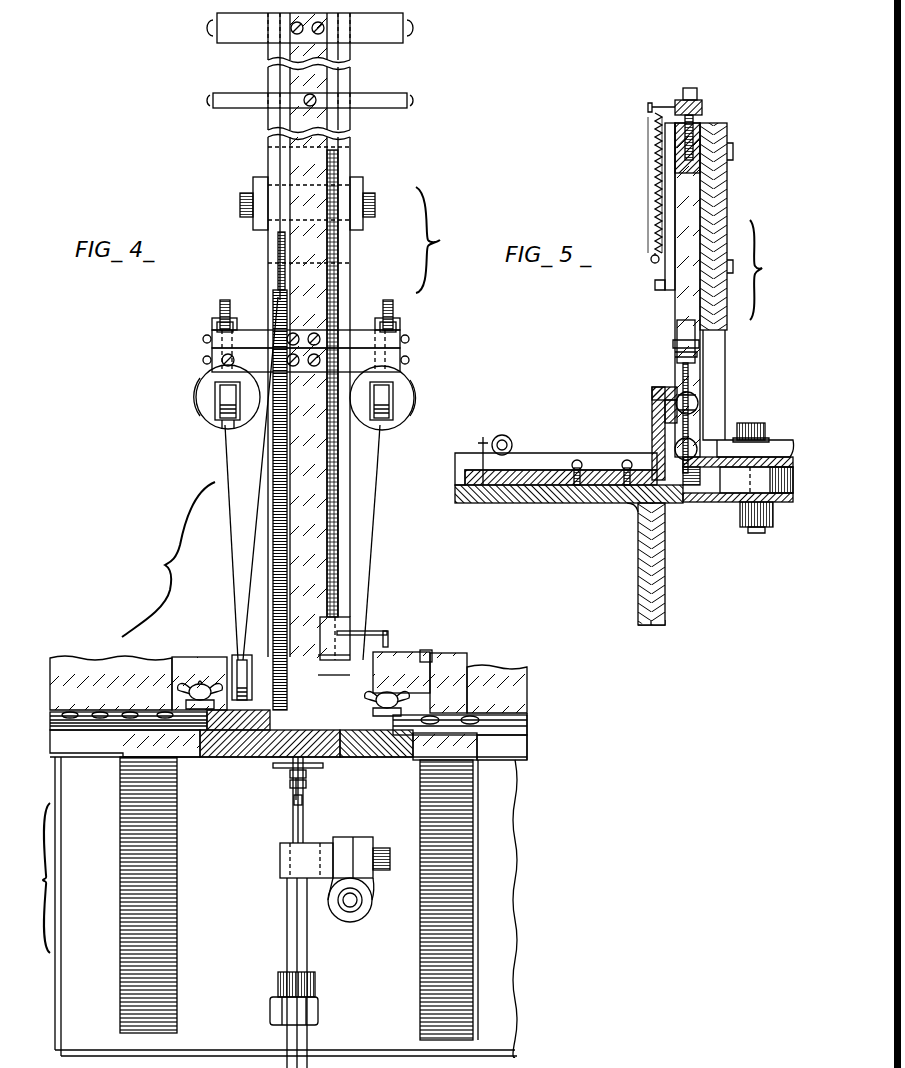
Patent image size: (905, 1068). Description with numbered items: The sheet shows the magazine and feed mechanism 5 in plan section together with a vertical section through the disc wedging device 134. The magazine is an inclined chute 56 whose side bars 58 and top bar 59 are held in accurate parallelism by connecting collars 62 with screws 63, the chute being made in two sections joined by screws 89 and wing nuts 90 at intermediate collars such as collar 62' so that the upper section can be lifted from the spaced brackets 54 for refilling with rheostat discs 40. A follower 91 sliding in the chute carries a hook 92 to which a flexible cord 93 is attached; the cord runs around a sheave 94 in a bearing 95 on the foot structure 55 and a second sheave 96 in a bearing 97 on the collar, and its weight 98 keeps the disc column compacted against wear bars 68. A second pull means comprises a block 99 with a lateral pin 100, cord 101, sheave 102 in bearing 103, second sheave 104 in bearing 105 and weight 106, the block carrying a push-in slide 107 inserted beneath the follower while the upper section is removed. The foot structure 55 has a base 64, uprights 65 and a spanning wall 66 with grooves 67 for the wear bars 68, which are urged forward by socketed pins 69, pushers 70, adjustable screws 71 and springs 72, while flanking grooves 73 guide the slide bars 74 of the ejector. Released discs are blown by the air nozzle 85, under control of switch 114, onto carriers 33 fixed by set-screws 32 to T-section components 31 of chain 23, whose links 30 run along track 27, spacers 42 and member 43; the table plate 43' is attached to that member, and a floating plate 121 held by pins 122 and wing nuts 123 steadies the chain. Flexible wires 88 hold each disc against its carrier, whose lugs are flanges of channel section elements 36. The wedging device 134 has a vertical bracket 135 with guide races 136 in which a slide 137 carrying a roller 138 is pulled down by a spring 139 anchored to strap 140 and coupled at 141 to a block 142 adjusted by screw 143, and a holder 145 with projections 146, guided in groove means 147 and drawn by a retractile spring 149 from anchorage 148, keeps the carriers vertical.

In FIG. 4, the magazine and feed mechanism 5 is at (168, 559).
In FIG. 5, the chain 23 is at (690, 493).
In FIG. 5, the track 27 is at (786, 502).
In FIG. 5, the links 30 is at (716, 497).
In FIG. 5, the T-section components 31 is at (679, 470).
In FIG. 5, the set-screw 32 is at (705, 440).
In FIG. 4, the carrier 33 is at (140, 712).
In FIG. 5, the carrier 33 is at (692, 380).
In FIG. 5, the channel section elements 36 is at (697, 400).
In FIG. 4, the rheostat discs 40 is at (327, 555).
In FIG. 5, the rheostat discs 40 is at (683, 370).
In FIG. 5, the spacers 42 is at (742, 502).
In FIG. 4, the member 43 is at (518, 705).
In FIG. 5, the member 43 is at (739, 431).
In FIG. 4, the table plate 43' is at (475, 679).
In FIG. 4, the brackets 54 is at (255, 188).
In FIG. 4, the foot structure 55 is at (264, 906).
In FIG. 4, the inclined chute 56 is at (365, 335).
In FIG. 4, the side bars 58 is at (274, 490).
In FIG. 4, the top bar 59 is at (313, 245).
In FIG. 4, the connecting collars 62 is at (320, 380).
In FIG. 4, the intermediate collar 62' is at (277, 351).
In FIG. 4, the screws 63 is at (218, 38).
In FIG. 4, the base 64 is at (526, 908).
In FIG. 4, the uprights 65 is at (122, 877).
In FIG. 4, the spanning wall 66 is at (395, 757).
In FIG. 4, the grooves 67 is at (305, 770).
In FIG. 4, the wear bars 68 is at (293, 760).
In FIG. 4, the socketed pins 69 is at (288, 778).
In FIG. 4, the pushers 70 is at (306, 786).
In FIG. 4, the adjustable screws 71 is at (295, 800).
In FIG. 4, the springs 72 is at (296, 786).
In FIG. 4, the grooves 73 is at (245, 757).
In FIG. 4, the slide bars 74 is at (225, 750).
In FIG. 4, the air nozzle 85 is at (287, 910).
In FIG. 4, the flexible wires 88 is at (108, 730).
In FIG. 5, the flexible wires 88 is at (678, 385).
In FIG. 4, the screws 89 is at (224, 300).
In FIG. 4, the wing nuts 90 is at (228, 322).
In FIG. 4, the follower 91 is at (283, 152).
In FIG. 4, the hook 92 is at (278, 238).
In FIG. 4, the flexible cord 93 is at (266, 440).
In FIG. 4, the sheave 94 is at (240, 656).
In FIG. 4, the bearing 95 is at (234, 656).
In FIG. 4, the second sheave 96 is at (224, 422).
In FIG. 4, the bearing 97 is at (215, 390).
In FIG. 4, the weight 98 is at (198, 400).
In FIG. 4, the block 99 is at (350, 617).
In FIG. 4, the lateral hook or pin 100 is at (388, 636).
In FIG. 4, the flexible cord 101 is at (373, 512).
In FIG. 4, the sheave 102 is at (318, 655).
In FIG. 4, the bearing 103 is at (318, 675).
In FIG. 4, the second sheave 104 is at (381, 430).
In FIG. 4, the bearing 105 is at (395, 385).
In FIG. 4, the weight 106 is at (414, 398).
In FIG. 4, the push-in slide 107 is at (372, 631).
In FIG. 4, the switch 114 is at (433, 645).
In FIG. 4, the floating plate 121 is at (402, 700).
In FIG. 4, the pins 122 is at (205, 677).
In FIG. 4, the wing nuts 123 is at (172, 660).
In FIG. 5, the wedging device 134 is at (751, 226).
In FIG. 5, the vertical bracket 135 is at (718, 345).
In FIG. 5, the guide races 136 is at (708, 170).
In FIG. 5, the slide 137 is at (697, 197).
In FIG. 5, the roller 138 is at (677, 327).
In FIG. 5, the spring 139 is at (650, 186).
In FIG. 5, the apertured strap 140 is at (652, 262).
In FIG. 5, the coupling 141 is at (652, 105).
In FIG. 5, the block 142 is at (702, 104).
In FIG. 5, the screw 143 is at (695, 125).
In FIG. 5, the holder 145 is at (665, 412).
In FIG. 5, the projections 146 is at (652, 393).
In FIG. 5, the groove means 147 is at (532, 468).
In FIG. 5, the anchorage 148 is at (480, 455).
In FIG. 5, the retractile spring 149 is at (511, 427).